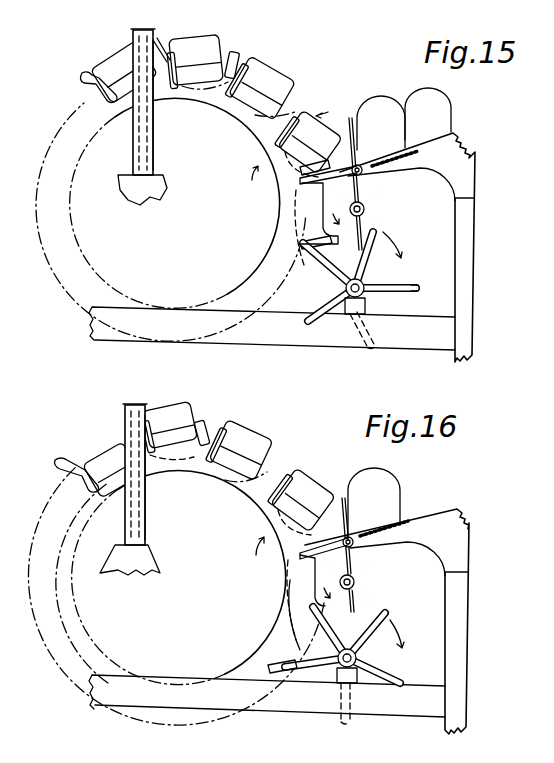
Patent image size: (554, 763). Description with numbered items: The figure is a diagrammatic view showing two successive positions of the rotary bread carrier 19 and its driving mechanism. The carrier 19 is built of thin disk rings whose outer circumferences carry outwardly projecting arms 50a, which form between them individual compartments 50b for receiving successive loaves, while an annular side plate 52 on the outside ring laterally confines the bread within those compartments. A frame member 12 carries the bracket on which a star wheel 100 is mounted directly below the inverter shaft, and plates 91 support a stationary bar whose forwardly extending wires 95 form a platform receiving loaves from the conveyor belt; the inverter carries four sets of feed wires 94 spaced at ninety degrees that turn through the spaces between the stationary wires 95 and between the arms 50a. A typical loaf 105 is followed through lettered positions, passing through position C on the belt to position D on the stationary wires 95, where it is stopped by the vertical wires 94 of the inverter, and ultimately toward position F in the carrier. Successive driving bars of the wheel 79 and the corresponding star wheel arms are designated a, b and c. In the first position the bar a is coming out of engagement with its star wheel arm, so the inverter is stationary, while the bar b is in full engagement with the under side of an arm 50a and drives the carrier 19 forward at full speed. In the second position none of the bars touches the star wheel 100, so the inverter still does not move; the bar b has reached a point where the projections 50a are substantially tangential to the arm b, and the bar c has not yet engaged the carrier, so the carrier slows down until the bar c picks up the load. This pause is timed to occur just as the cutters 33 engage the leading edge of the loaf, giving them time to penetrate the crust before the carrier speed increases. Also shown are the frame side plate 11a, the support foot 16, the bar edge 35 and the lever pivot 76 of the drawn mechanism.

In FIG. 15, the frame side plate 11a is at (468, 257).
In FIG. 16, the frame side plate 11a is at (462, 626).
In FIG. 15, the frame member 12 is at (272, 328).
In FIG. 16, the frame member 12 is at (267, 696).
In FIG. 15, the support foot 16 is at (142, 190).
In FIG. 16, the support foot 16 is at (130, 560).
In FIG. 15, the rotary bread carrier 19 is at (244, 134).
In FIG. 16, the rotary bread carrier 19 is at (252, 527).
In FIG. 15, the cutters 33 is at (148, 128).
In FIG. 16, the cutters 33 is at (138, 499).
In FIG. 15, the guide bar edge 35 is at (153, 144).
In FIG. 16, the guide bar edge 35 is at (145, 527).
In FIG. 15, the outwardly projecting arms 50a is at (290, 102).
In FIG. 16, the outwardly projecting arms 50a is at (282, 470).
In FIG. 15, the individual compartments 50b is at (302, 108).
In FIG. 16, the individual compartments 50b is at (288, 488).
In FIG. 15, the annular side plate 52 is at (187, 78).
In FIG. 16, the annular side plate 52 is at (164, 449).
In FIG. 15, the lever pivot 76 is at (360, 314).
In FIG. 16, the lever pivot 76 is at (358, 655).
In FIG. 15, the wheel 79 is at (419, 289).
In FIG. 16, the wheel 79 is at (401, 680).
In FIG. 15, the plates 91 is at (401, 177).
In FIG. 16, the plates 91 is at (400, 551).
In FIG. 15, the feed wires 94 is at (355, 116).
In FIG. 16, the feed wires 94 is at (345, 498).
In FIG. 15, the stationary feed wires 95 is at (402, 140).
In FIG. 16, the stationary feed wires 95 is at (395, 520).
In FIG. 15, the star wheel 100 is at (366, 208).
In FIG. 16, the star wheel 100 is at (356, 580).
In FIG. 15, the loaf of bread 105 is at (415, 106).
In FIG. 16, the loaf of bread 105 is at (383, 492).
In FIG. 15, the position F is at (308, 142).
In FIG. 16, the position F is at (301, 500).
In FIG. 15, the position D is at (381, 123).
In FIG. 16, the position D is at (374, 504).
In FIG. 15, the position C is at (429, 113).
In FIG. 15, the driving bar a is at (368, 240).
In FIG. 16, the driving bar a is at (345, 614).
In FIG. 15, the driving bar b is at (334, 260).
In FIG. 16, the driving bar b is at (314, 617).
In FIG. 15, the driving bar c is at (330, 306).
In FIG. 16, the driving bar c is at (300, 661).